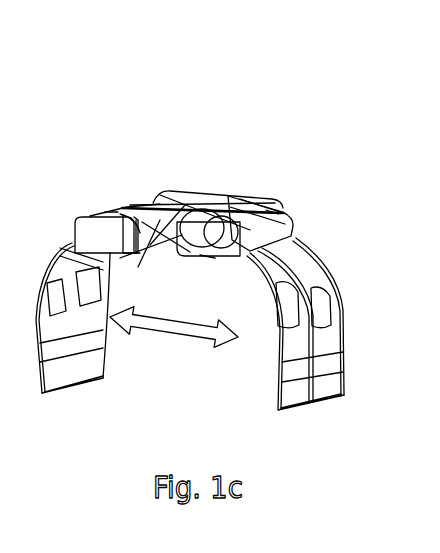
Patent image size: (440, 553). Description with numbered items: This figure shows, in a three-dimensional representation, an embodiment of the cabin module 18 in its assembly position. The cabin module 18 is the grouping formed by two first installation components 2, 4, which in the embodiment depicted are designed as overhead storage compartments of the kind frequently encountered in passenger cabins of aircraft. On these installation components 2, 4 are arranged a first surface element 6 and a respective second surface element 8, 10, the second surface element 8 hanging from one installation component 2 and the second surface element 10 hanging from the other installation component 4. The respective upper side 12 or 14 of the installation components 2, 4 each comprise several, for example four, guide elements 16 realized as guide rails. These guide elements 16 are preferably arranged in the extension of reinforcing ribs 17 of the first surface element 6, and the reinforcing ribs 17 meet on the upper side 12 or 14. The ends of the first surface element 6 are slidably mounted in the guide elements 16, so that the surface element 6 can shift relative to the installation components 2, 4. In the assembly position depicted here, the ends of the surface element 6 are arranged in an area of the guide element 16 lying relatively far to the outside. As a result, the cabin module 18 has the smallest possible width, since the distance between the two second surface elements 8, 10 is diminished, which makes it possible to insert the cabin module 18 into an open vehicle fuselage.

The cabin module 18 is at (157, 110).
The first installation component 2 is at (93, 231).
The first installation component 4 is at (293, 217).
The first surface element 6 is at (174, 195).
The second surface element 8 is at (50, 332).
The second surface element 10 is at (326, 336).
The upper side 12 is at (126, 211).
The upper side 14 is at (228, 213).
The guide element 16 is at (108, 210).
The reinforcing rib 17 is at (190, 192).